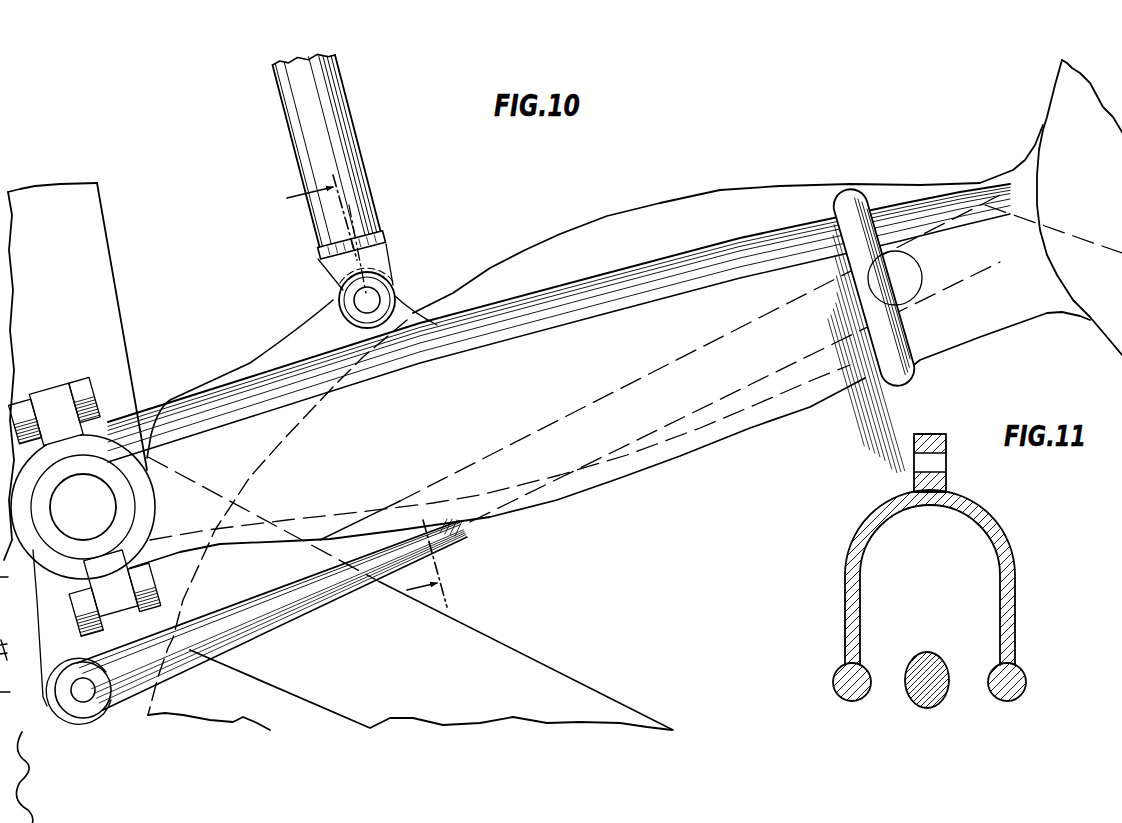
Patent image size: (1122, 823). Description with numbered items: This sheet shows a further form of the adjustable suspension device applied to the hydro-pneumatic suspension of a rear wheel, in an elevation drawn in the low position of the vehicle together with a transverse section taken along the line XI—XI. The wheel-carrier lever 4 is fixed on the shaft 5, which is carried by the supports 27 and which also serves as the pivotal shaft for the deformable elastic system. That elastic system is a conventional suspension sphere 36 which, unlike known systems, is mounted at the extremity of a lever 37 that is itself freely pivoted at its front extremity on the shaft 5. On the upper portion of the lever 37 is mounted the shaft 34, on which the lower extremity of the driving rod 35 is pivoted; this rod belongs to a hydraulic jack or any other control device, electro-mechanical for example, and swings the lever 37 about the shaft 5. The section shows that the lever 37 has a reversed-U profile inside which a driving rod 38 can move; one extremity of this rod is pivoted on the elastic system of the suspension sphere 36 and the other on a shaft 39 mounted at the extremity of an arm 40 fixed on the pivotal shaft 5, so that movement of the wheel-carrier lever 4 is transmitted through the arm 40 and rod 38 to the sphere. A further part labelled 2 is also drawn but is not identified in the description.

In FIG. 10, the frame member 2 is at (526, 263).
In FIG. 10, the wheel-carrier lever 4 is at (538, 677).
In FIG. 10, the shaft 5 is at (100, 517).
In FIG. 10, the supports 27 is at (120, 307).
In FIG. 10, the shaft 34 is at (378, 300).
In FIG. 11, the shaft 34 is at (915, 465).
In FIG. 10, the driving rod 35 is at (340, 152).
In FIG. 10, the suspension sphere 36 is at (1047, 117).
In FIG. 10, the lever 37 is at (602, 295).
In FIG. 11, the lever 37 is at (1010, 578).
In FIG. 10, the driving rod 38 is at (455, 523).
In FIG. 11, the driving rod 38 is at (943, 667).
In FIG. 10, the shaft 39 is at (82, 690).
In FIG. 10, the arm 40 is at (53, 650).